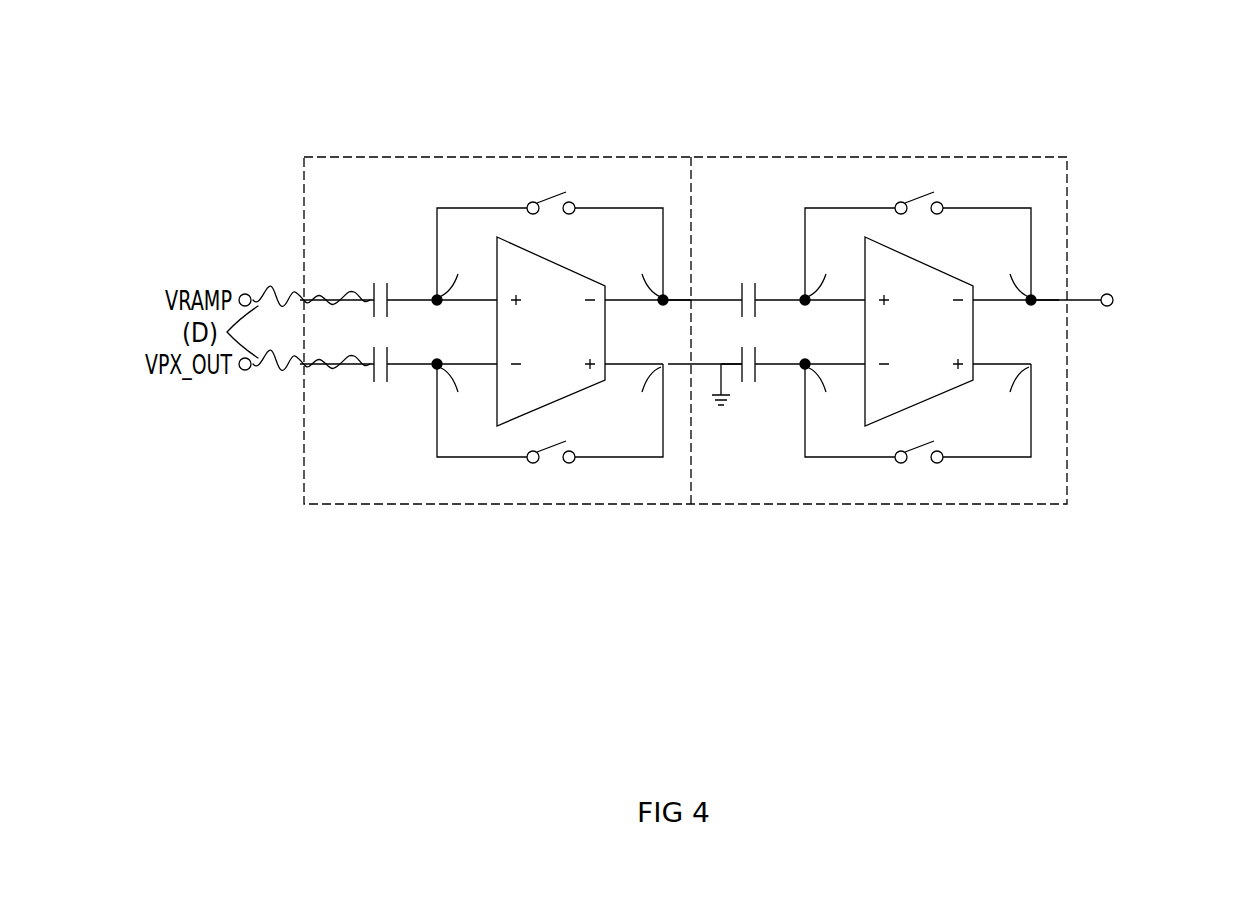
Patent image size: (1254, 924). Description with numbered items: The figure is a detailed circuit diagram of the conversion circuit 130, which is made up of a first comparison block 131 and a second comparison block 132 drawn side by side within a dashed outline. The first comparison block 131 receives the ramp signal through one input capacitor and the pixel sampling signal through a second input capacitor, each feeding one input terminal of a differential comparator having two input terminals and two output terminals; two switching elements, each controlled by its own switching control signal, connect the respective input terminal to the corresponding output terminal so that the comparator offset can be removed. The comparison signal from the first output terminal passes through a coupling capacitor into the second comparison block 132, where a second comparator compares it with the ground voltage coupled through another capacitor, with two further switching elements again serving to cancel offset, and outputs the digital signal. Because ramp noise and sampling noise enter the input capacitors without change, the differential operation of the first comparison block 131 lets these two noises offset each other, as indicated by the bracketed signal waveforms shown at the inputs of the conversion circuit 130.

The conversion circuit 130 is at (420, 33).
The first comparison block 131 is at (540, 157).
The second comparison block 132 is at (918, 157).